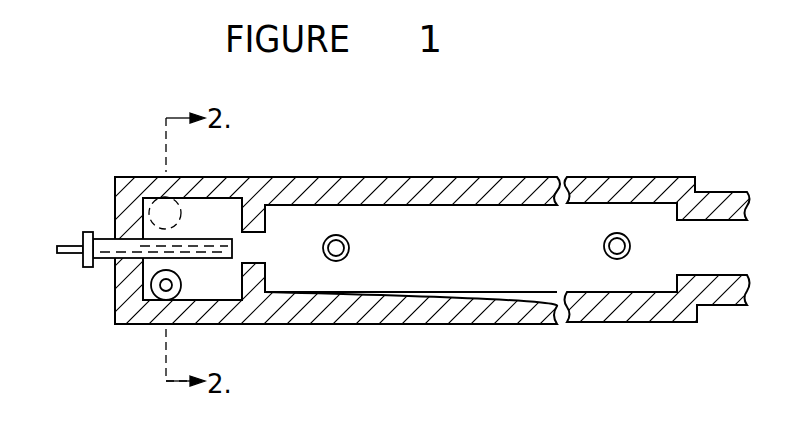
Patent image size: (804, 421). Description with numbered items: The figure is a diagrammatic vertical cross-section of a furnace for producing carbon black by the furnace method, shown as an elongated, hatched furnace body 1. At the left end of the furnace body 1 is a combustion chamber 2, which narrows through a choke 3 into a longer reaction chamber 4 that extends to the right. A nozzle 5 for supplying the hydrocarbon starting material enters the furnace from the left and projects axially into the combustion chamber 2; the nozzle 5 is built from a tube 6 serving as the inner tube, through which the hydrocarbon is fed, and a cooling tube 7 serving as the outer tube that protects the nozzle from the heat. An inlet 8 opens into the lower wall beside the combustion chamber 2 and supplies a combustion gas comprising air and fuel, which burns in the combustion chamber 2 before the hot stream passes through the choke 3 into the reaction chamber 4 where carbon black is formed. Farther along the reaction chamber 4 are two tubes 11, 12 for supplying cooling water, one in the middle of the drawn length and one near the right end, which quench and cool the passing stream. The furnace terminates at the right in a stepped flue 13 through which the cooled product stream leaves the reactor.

The furnace body 1 is at (457, 177).
The combustion chamber 2 is at (213, 221).
The choke 3 is at (255, 248).
The reaction chamber 4 is at (345, 228).
The nozzle 5 is at (108, 238).
The tube 6 is at (66, 256).
The cooling tube 7 is at (104, 268).
The inlet 8 is at (160, 292).
The tube for supplying cooling water 11 is at (338, 262).
The tube for supplying cooling water 12 is at (617, 233).
The flue 13 is at (712, 248).